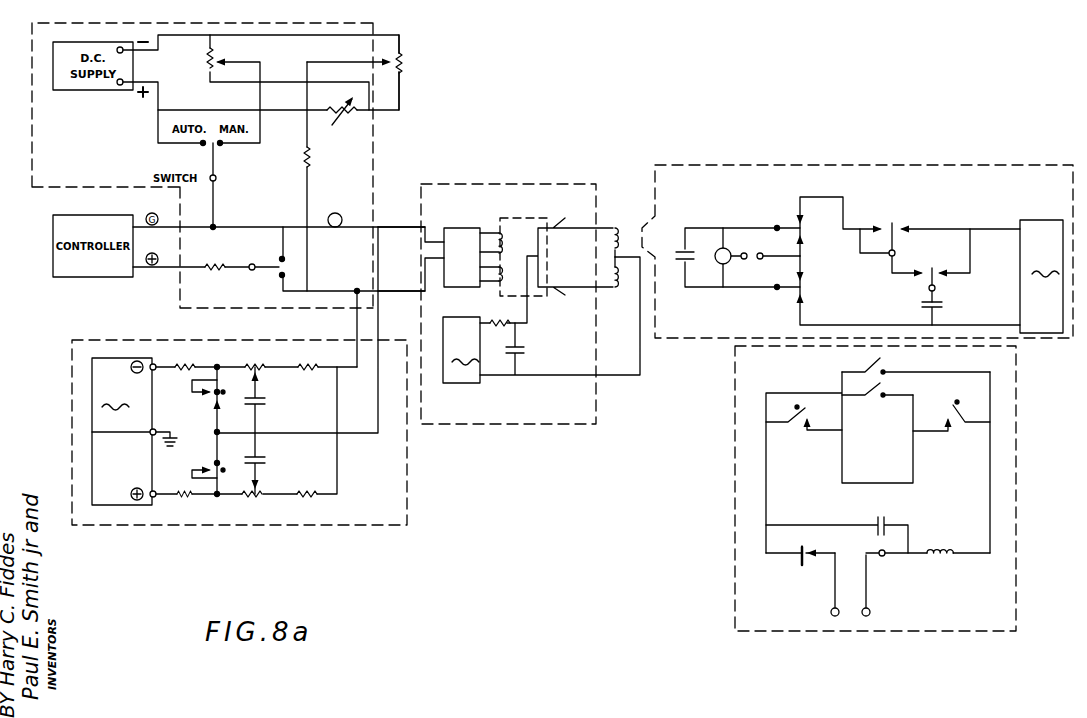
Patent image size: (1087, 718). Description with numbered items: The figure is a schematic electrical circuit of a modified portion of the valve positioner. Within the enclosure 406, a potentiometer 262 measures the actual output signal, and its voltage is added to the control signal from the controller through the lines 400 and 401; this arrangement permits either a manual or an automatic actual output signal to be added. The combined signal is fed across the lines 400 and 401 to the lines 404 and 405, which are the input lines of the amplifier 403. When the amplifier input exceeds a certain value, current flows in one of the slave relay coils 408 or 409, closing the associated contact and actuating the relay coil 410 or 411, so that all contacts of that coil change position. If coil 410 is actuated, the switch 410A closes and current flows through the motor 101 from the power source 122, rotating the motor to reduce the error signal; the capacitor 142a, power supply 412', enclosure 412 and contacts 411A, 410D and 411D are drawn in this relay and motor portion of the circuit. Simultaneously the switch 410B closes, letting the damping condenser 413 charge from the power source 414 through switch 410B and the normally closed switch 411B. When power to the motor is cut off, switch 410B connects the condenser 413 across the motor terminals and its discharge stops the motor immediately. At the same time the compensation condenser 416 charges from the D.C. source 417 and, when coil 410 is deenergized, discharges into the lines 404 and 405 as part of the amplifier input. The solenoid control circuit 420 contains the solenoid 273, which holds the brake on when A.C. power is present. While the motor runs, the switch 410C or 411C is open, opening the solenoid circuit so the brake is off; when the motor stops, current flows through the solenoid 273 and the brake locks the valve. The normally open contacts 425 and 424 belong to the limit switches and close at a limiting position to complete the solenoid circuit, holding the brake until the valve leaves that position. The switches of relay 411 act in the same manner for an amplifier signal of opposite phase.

The enclosure 406 is at (373, 25).
The potentiometer 262 is at (407, 63).
The line 400 is at (215, 225).
The line 401 is at (313, 279).
The input line 404 is at (398, 227).
The input line 405 is at (406, 293).
The amplifier 403 is at (459, 227).
The slave relay coil 408 is at (513, 232).
The slave relay coil 409 is at (502, 286).
The relay coil 410 is at (627, 226).
The relay coil 411 is at (621, 292).
The power supply 412' is at (461, 350).
The relay control section 412 is at (857, 262).
The capacitor 142a is at (724, 257).
The motor 101 is at (715, 252).
The power source 122 is at (765, 238).
The switch 410A is at (793, 218).
The relay contacts 411A is at (792, 295).
The switch 410B is at (895, 221).
The switch 411B is at (922, 283).
The damping condenser 413 is at (945, 303).
The power source 414 is at (1041, 276).
The D.C. source 417 is at (124, 431).
The compensation circuit condenser 416 is at (266, 400).
The relay contact 410D is at (232, 403).
The relay contact 411D is at (232, 460).
The contact 425 is at (862, 364).
The contact 424 is at (882, 386).
The switch 411C is at (951, 416).
The switch 410C is at (820, 409).
The solenoid control circuit 420 is at (755, 467).
The solenoid 273 is at (943, 558).